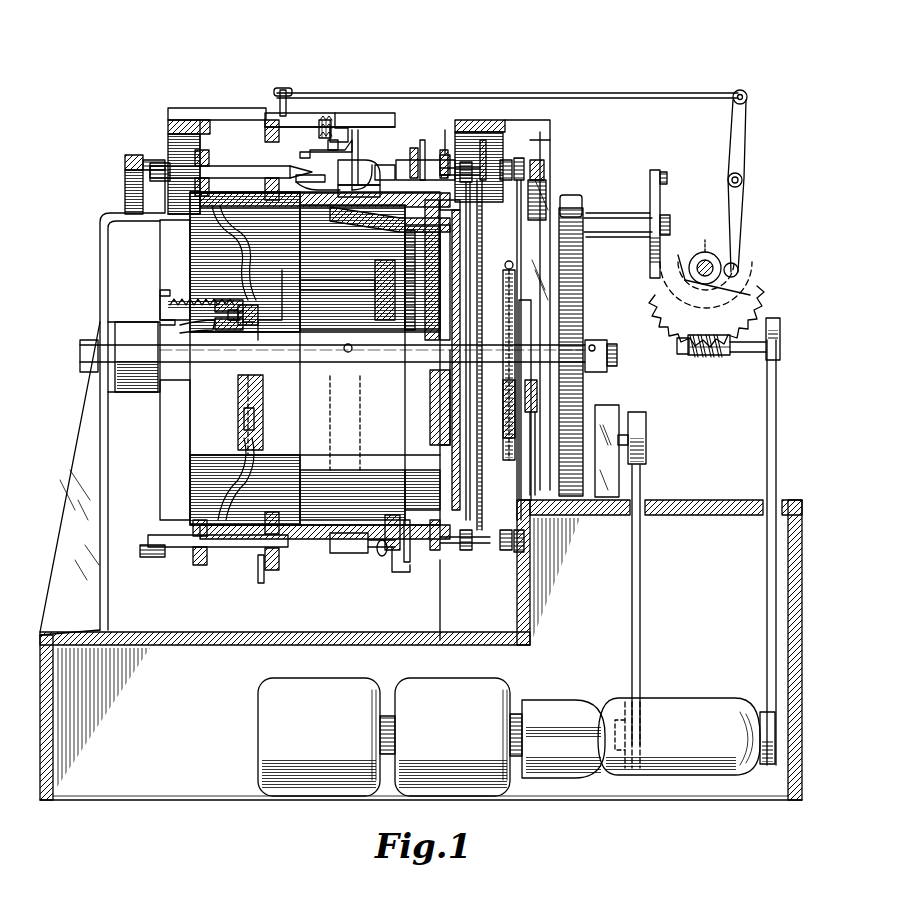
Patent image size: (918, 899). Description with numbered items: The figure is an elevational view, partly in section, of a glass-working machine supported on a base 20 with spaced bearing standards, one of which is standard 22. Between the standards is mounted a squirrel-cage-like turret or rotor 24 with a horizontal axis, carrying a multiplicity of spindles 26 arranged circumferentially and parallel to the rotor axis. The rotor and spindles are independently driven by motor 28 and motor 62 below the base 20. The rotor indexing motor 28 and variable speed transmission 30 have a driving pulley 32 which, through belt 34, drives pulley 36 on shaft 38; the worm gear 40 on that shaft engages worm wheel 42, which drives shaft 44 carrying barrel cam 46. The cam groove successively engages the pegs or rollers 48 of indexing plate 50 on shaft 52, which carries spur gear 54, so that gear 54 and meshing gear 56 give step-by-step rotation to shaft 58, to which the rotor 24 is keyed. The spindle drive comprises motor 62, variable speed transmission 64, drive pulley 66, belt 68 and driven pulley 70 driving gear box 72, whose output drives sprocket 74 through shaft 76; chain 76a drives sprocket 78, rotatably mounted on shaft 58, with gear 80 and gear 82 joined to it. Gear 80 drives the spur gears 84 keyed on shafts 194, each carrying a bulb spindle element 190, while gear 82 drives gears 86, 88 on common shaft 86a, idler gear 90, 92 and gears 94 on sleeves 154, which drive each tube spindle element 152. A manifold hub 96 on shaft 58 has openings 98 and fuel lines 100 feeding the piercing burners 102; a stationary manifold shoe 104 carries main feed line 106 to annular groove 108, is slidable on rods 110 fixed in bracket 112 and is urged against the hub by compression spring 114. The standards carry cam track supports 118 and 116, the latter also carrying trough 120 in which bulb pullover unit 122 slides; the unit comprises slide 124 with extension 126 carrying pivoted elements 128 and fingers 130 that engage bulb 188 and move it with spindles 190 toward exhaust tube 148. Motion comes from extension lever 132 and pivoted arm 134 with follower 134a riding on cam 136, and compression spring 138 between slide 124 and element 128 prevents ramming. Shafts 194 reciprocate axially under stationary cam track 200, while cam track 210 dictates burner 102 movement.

The base 20 is at (594, 620).
The bearing standard 22 is at (108, 528).
The turret or rotor 24 is at (310, 428).
The spindle 26 is at (376, 160).
The rotor indexing motor 28 is at (457, 713).
The variable speed transmission 30 is at (688, 723).
The driving pulley 32 is at (762, 758).
The belt 34 is at (765, 610).
The pulley 36 is at (766, 358).
The shaft 38 is at (720, 357).
The worm gear 40 is at (688, 357).
The worm wheel 42 is at (762, 280).
The shaft 44 is at (696, 255).
The barrel cam 46 is at (668, 249).
The pegs or rollers 48 is at (667, 178).
The indexing plate 50 is at (649, 190).
The shaft 52 is at (615, 212).
The spur gear 54 is at (566, 194).
The gear 56 is at (583, 290).
The shaft 58 is at (598, 340).
The spindle drive motor 62 is at (318, 713).
The variable speed transmission 64 is at (562, 720).
The drive pulley 66 is at (624, 704).
The belt 68 is at (641, 682).
The driven pulley 70 is at (646, 442).
The gear box 72 is at (610, 475).
The sprocket 74 is at (528, 412).
The shaft 76 is at (547, 430).
The chain 76a is at (505, 385).
The sprocket 78 is at (520, 262).
The gear 80 is at (483, 240).
The gear 82 is at (425, 330).
The spur gear 84 is at (512, 166).
The gear 86 is at (408, 275).
The common shaft 86a is at (372, 285).
The gear 88 is at (420, 285).
The idler gear 90 is at (440, 410).
The idler gear 92 is at (452, 436).
The gear 94 is at (465, 160).
The manifold hub 96 is at (238, 404).
The opening 98 is at (244, 422).
The fuel line 100 is at (244, 460).
The piercing burner 102 is at (232, 170).
The manifold shoe 104 is at (230, 300).
The main feed line 106 is at (213, 340).
The annular groove 108 is at (248, 318).
The rod 110 is at (183, 305).
The bracket 112 is at (140, 322).
The compression spring 114 is at (172, 322).
The cam track support 116 is at (168, 135).
The cam track support 118 is at (512, 125).
The trough 120 is at (188, 108).
The bulb pullover unit 122 is at (344, 92).
The slide 124 is at (272, 113).
The extension 126 is at (340, 113).
The element 128 is at (352, 140).
The finger 130 is at (360, 165).
The extension lever 132 is at (700, 92).
The pivoted arm 134 is at (736, 125).
The follower 134a is at (738, 268).
The cam 136 is at (704, 258).
The compression spring 138 is at (310, 115).
The exhaust tube 148 is at (396, 160).
The tube spindle element 152 is at (408, 160).
The sleeve 154 is at (440, 168).
The bulb 188 is at (335, 178).
The bulb spindle element 190 is at (338, 185).
The shaft 194 is at (512, 158).
The cam track 200 is at (545, 168).
The cam track 210 is at (124, 165).